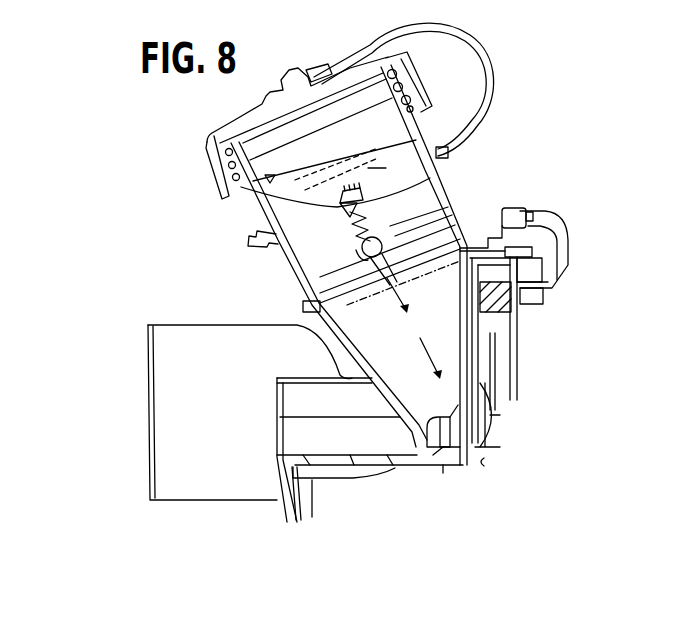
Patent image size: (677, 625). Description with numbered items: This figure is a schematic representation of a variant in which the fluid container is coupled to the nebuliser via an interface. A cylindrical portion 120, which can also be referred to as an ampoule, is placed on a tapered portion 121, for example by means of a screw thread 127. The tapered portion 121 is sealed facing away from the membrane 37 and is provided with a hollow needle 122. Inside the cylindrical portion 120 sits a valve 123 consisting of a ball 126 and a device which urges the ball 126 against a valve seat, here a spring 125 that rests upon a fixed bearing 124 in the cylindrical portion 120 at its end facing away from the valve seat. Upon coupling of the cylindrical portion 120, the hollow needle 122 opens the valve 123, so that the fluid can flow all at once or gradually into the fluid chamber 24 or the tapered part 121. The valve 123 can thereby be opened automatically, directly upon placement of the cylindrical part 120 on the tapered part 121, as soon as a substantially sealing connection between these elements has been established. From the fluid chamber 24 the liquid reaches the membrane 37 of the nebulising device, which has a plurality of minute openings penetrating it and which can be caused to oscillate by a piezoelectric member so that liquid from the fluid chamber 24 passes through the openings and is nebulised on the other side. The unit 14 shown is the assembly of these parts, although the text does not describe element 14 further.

The dispensing unit 14 is at (498, 182).
The fluid chamber 24 is at (456, 437).
The membrane 37 is at (492, 421).
The cylindrical portion 120 is at (256, 212).
The tapered portion 121 is at (330, 373).
The hollow needle 122 is at (533, 240).
The valve 123 is at (345, 231).
The fixed bearing 124 is at (234, 180).
The spring 125 is at (430, 178).
The ball 126 is at (452, 208).
The screw thread 127 is at (308, 305).